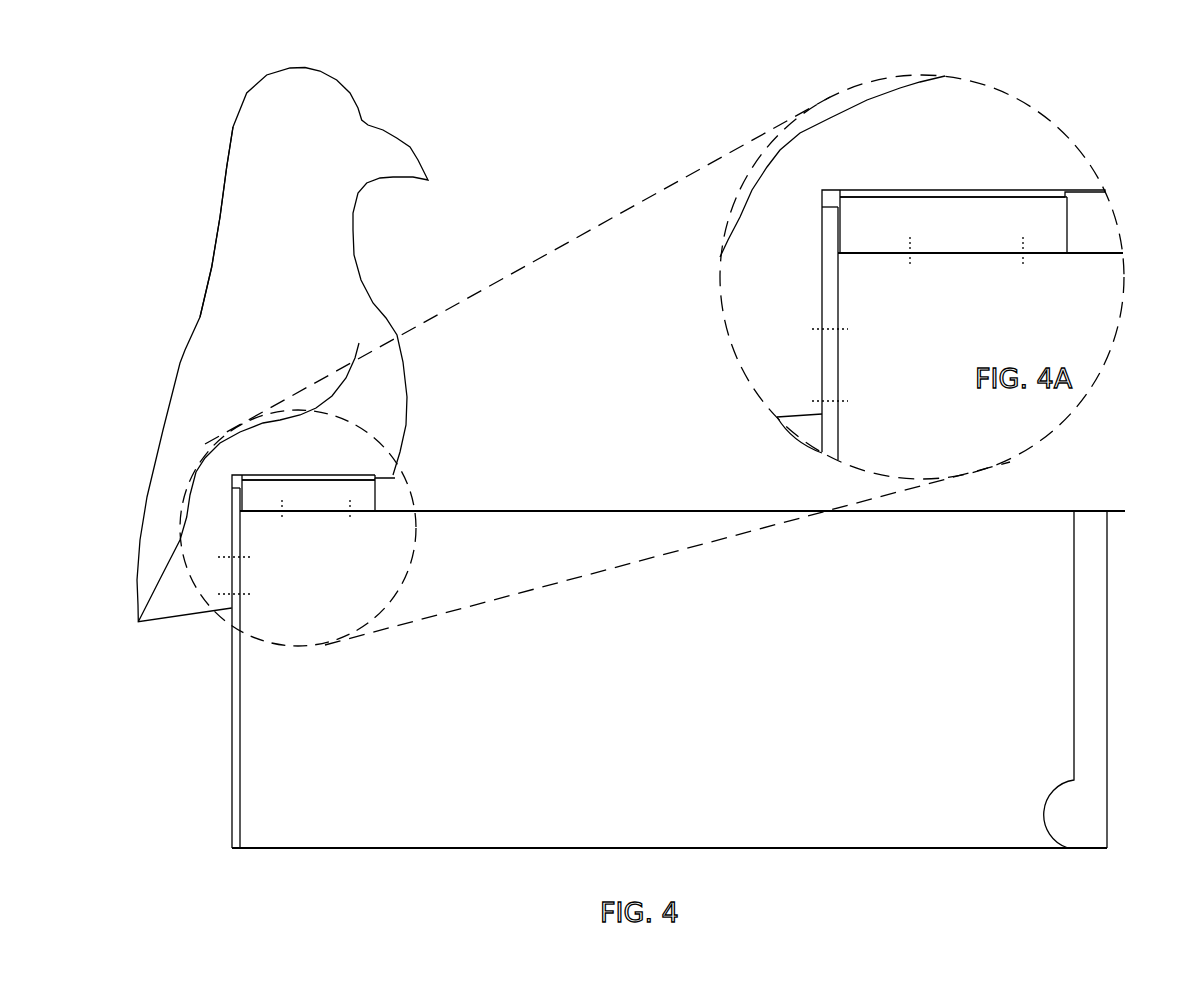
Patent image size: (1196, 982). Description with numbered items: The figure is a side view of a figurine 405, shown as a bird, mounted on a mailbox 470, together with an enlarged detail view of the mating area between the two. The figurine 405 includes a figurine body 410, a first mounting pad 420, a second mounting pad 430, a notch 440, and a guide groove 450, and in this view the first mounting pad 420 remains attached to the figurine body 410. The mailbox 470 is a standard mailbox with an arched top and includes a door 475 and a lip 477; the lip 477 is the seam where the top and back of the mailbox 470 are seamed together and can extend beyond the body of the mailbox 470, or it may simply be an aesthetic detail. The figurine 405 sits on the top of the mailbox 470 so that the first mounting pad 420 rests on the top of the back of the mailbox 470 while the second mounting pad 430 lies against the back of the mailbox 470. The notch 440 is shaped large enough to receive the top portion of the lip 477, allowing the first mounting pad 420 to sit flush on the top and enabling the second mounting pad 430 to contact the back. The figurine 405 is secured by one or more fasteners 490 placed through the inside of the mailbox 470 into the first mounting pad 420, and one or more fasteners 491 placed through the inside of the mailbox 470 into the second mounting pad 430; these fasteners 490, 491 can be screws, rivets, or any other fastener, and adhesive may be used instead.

In FIG. 4, the figurine 405 is at (195, 140).
In FIG. 4, the figurine body 410 is at (210, 267).
In FIG. 4, the first mounting pad 420 is at (377, 496).
In FIG. 4A, the first mounting pad 420 is at (1035, 242).
In FIG. 4, the second mounting pad 430 is at (230, 580).
In FIG. 4A, the second mounting pad 430 is at (823, 395).
In FIG. 4, the notch 440 is at (237, 473).
In FIG. 4A, the notch 440 is at (832, 195).
In FIG. 4, the guide groove 450 is at (375, 479).
In FIG. 4A, the guide groove 450 is at (1068, 202).
In FIG. 4, the mailbox 470 is at (695, 848).
In FIG. 4, the door 475 is at (1084, 705).
In FIG. 4, the lip 477 is at (242, 511).
In FIG. 4A, the lip 477 is at (828, 214).
In FIG. 4, the fasteners 490 is at (283, 517).
In FIG. 4A, the fasteners 490 is at (910, 265).
In FIG. 4, the fasteners 491 is at (248, 560).
In FIG. 4A, the fasteners 491 is at (843, 330).